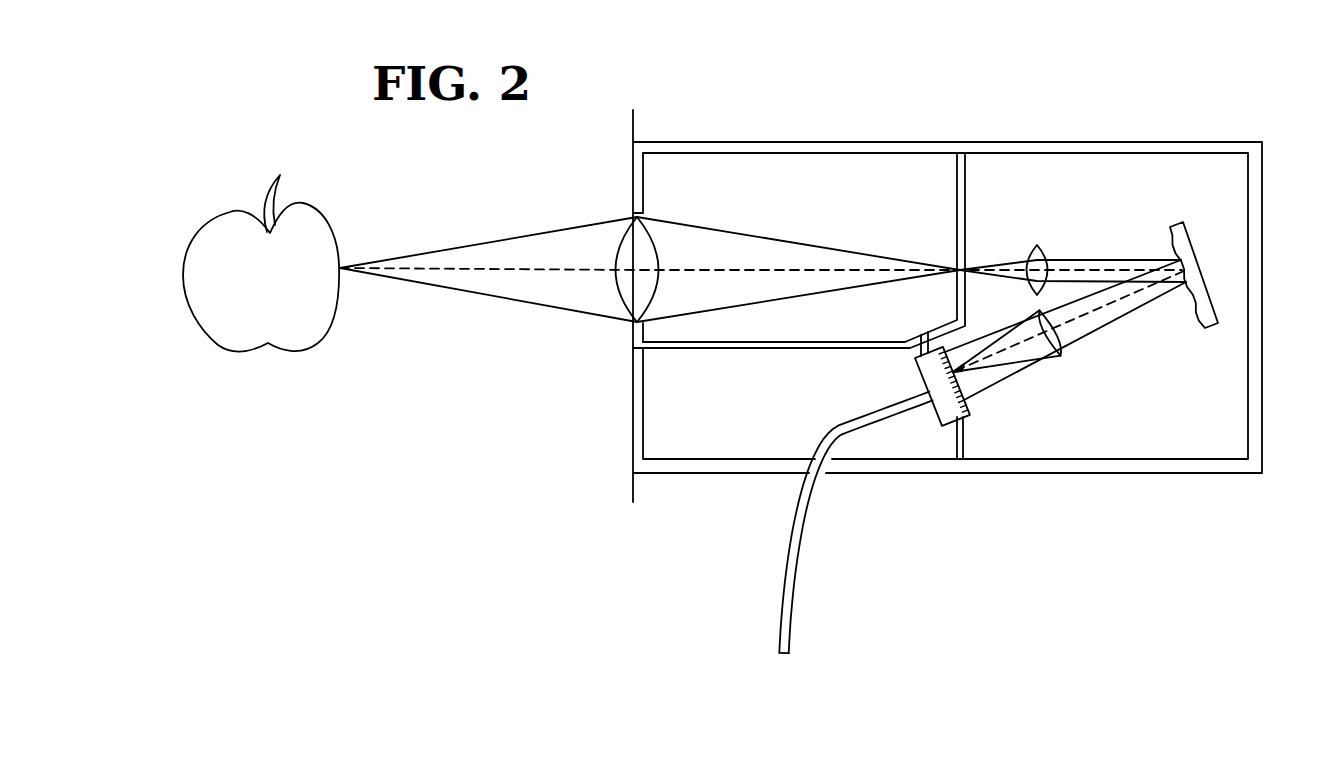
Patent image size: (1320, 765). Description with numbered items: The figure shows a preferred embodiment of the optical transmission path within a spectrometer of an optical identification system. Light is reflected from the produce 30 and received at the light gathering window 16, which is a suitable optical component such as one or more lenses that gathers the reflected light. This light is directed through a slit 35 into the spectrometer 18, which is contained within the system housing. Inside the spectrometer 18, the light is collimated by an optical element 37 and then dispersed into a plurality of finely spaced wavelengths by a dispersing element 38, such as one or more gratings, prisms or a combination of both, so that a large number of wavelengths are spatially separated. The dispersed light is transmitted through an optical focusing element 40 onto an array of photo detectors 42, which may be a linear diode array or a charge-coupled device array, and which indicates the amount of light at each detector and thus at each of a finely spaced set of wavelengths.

The spectrometer 18 is at (1133, 142).
The produce 30 is at (315, 203).
The light gathering window 16 is at (595, 222).
The slit 35 is at (943, 255).
The optical element 37 is at (1037, 245).
The dispersing element 38 is at (1183, 222).
The optical focusing element 40 is at (1060, 356).
The array of photo detectors 42 is at (970, 417).